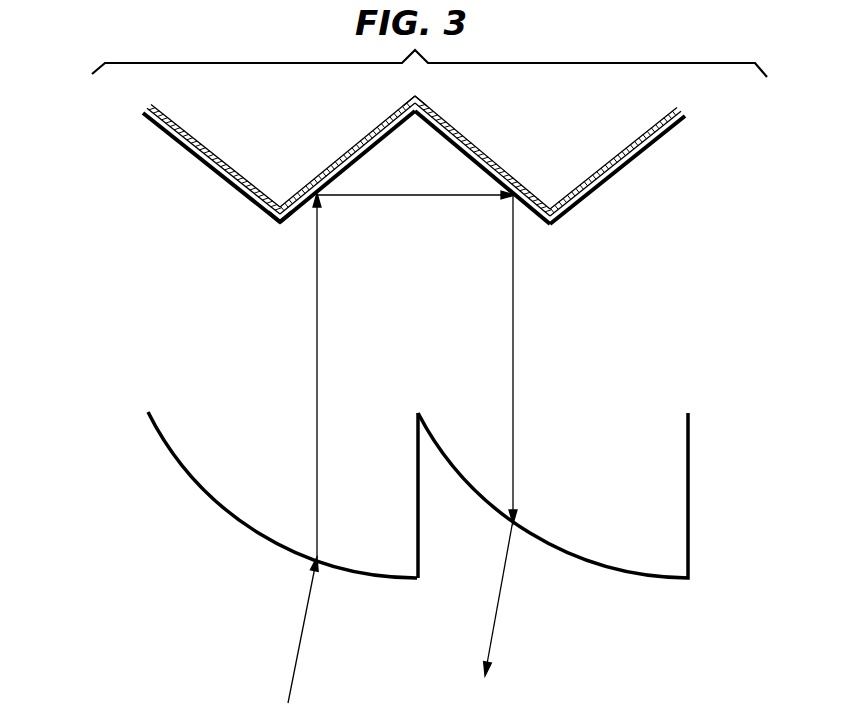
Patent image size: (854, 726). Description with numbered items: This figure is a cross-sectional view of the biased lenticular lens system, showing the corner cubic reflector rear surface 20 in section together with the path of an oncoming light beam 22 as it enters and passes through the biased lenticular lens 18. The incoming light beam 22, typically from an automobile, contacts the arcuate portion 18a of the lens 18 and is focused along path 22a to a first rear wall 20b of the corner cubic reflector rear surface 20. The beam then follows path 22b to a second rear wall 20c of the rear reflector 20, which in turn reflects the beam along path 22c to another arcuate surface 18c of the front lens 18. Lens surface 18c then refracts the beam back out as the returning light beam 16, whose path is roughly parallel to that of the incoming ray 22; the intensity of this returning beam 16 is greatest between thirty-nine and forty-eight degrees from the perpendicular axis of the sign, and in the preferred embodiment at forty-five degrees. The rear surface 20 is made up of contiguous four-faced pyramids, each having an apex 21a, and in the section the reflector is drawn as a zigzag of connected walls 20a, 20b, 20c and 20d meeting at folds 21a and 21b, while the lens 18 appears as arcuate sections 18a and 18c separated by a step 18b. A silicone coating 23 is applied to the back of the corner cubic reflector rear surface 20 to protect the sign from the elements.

The returning light beam 16 is at (498, 600).
The biased lenticular lens 18 is at (160, 392).
The arcuate portion 18a is at (242, 522).
The reflector step wall 18b is at (417, 516).
The arcuate surface 18c is at (583, 562).
The corner cubic reflector rear surface 20 is at (161, 130).
The louver first panel 20a is at (225, 179).
The first rear wall 20b is at (345, 157).
The second rear wall 20c is at (490, 158).
The louver fourth panel 20d is at (635, 160).
The apex 21a is at (276, 232).
The peak fold 21b is at (432, 110).
The incoming light beam 22 is at (303, 630).
The path 22a is at (316, 416).
The path 22b is at (447, 197).
The path 22c is at (515, 383).
The silicone coating 23 is at (592, 176).